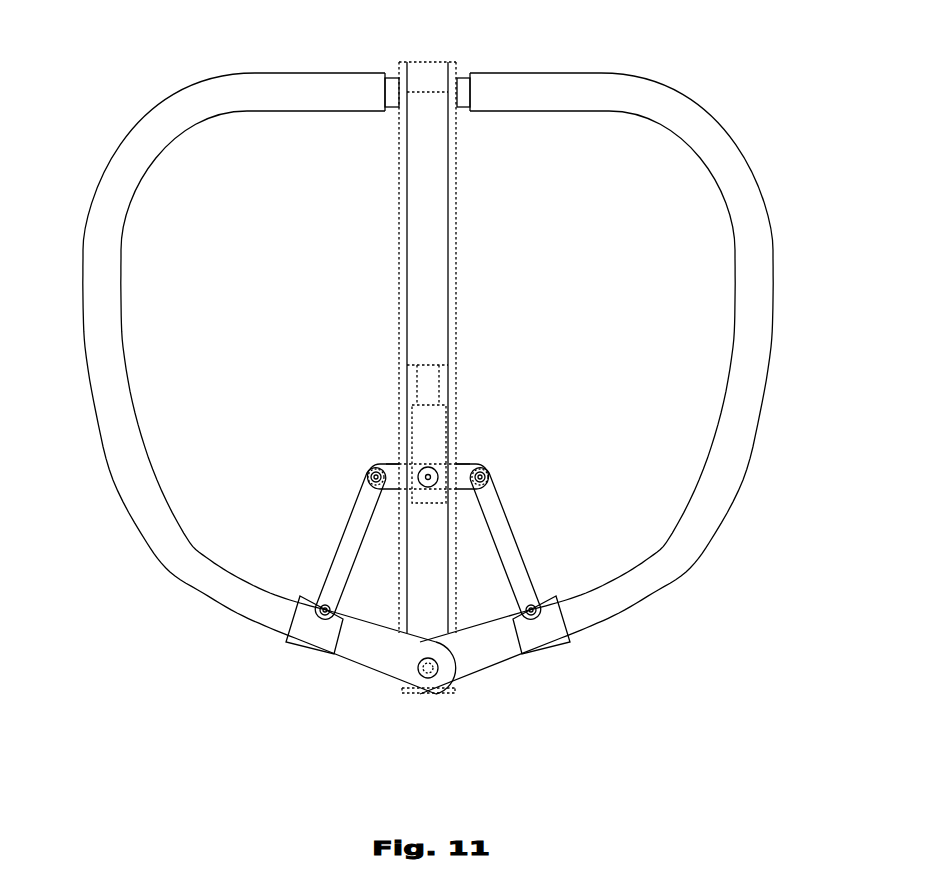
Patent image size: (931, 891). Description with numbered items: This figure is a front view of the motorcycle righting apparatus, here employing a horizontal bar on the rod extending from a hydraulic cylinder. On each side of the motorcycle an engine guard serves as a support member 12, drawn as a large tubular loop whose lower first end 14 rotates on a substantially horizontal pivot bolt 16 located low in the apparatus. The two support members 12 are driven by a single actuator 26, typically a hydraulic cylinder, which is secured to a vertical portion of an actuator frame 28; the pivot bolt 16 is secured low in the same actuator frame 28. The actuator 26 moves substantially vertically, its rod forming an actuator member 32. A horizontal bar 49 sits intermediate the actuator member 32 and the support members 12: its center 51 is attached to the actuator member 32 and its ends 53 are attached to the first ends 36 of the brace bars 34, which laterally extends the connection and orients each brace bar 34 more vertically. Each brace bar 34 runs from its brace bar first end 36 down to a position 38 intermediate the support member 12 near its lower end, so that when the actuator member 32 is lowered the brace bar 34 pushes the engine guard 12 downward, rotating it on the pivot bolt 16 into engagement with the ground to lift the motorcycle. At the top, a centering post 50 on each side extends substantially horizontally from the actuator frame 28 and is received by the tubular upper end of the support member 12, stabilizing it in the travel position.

The support member 12 is at (145, 530).
The first end 14 is at (378, 668).
The pivot bolt 16 is at (428, 680).
The actuator 26 is at (418, 153).
The actuator frame 28 is at (399, 222).
The actuator member 32 is at (428, 497).
The brace bar 34 is at (350, 532).
The brace bar first end 36 is at (370, 482).
The position intermediate the support member 38 is at (315, 637).
The horizontal bar 49 is at (392, 463).
The centering post 50 is at (393, 82).
The center 51 is at (430, 468).
The ends 53 is at (372, 468).